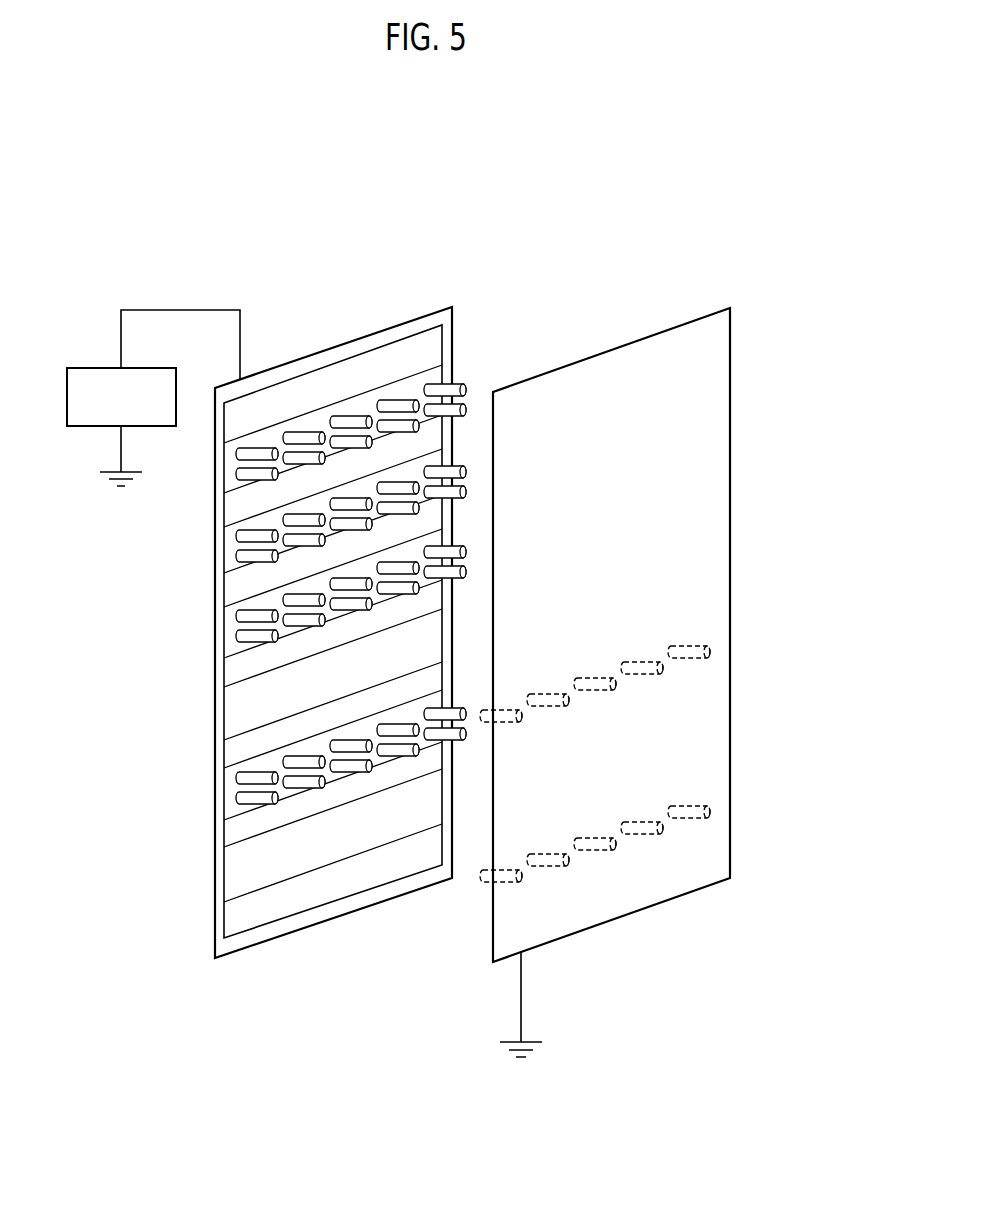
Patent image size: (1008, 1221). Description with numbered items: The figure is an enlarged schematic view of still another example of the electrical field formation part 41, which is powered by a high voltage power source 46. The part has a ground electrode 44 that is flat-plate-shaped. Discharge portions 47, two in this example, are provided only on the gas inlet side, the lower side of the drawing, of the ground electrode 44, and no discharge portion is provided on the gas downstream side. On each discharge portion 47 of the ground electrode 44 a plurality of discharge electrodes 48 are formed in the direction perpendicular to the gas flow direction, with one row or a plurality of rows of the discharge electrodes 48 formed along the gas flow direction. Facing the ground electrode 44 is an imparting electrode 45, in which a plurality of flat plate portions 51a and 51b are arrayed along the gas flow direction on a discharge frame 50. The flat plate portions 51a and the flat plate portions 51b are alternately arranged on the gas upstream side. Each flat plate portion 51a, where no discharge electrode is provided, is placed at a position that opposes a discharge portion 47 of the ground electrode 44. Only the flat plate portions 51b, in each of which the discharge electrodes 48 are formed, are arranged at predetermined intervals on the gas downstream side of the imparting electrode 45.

The electrical field formation part 41 is at (657, 641).
The ground electrode 44 is at (732, 338).
The imparting electrode 45 is at (477, 595).
The high voltage power source 46 is at (83, 366).
The discharge portion 47 is at (478, 633).
The discharge electrode 48 is at (262, 450).
The discharge frame 50 is at (315, 360).
The flat plate portion 51a is at (432, 648).
The flat plate portion 51b is at (435, 378).